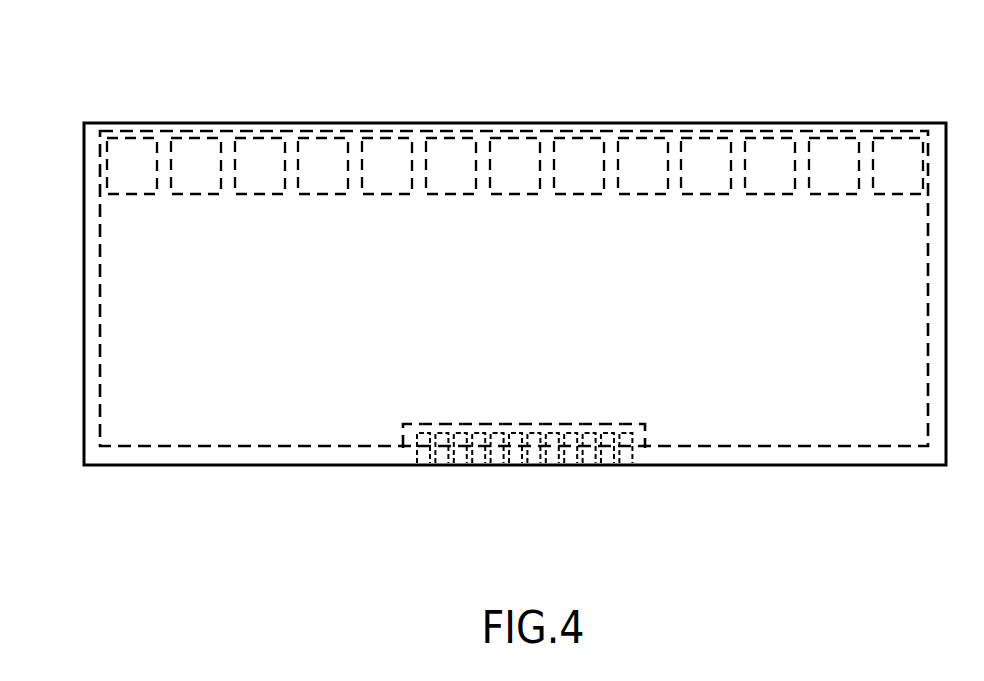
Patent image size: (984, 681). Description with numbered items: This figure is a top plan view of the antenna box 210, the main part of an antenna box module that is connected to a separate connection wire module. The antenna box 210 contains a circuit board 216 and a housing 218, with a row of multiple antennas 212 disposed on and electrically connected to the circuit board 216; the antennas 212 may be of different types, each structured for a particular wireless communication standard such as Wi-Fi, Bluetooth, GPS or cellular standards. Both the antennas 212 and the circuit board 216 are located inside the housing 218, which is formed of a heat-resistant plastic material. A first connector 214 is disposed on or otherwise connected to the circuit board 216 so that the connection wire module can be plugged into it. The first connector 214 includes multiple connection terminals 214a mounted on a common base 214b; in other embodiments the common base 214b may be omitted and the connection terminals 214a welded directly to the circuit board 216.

The antenna box 210 is at (893, 589).
The antennas 212 is at (134, 150).
The first connector 214 is at (529, 501).
The connection terminals 214a is at (441, 442).
The common base 214b is at (404, 449).
The circuit board 216 is at (123, 350).
The housing 218 is at (912, 122).